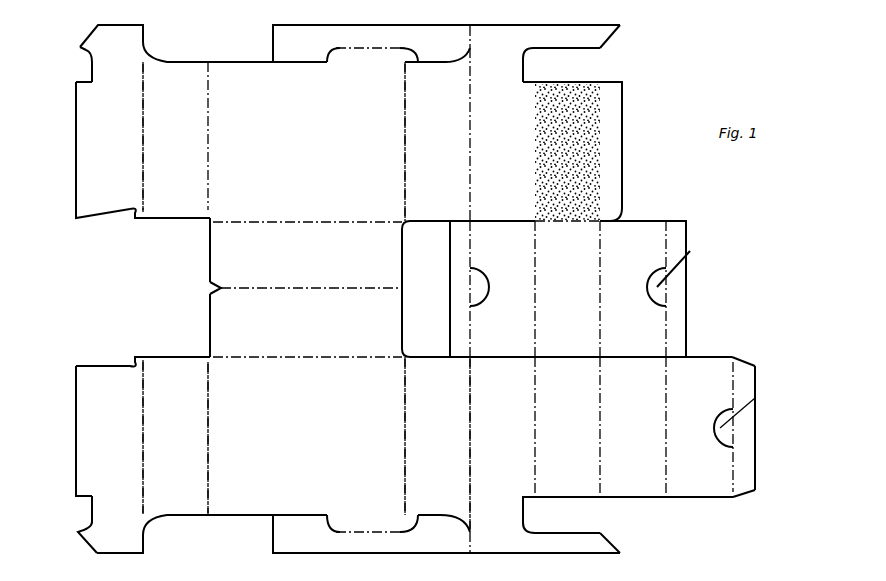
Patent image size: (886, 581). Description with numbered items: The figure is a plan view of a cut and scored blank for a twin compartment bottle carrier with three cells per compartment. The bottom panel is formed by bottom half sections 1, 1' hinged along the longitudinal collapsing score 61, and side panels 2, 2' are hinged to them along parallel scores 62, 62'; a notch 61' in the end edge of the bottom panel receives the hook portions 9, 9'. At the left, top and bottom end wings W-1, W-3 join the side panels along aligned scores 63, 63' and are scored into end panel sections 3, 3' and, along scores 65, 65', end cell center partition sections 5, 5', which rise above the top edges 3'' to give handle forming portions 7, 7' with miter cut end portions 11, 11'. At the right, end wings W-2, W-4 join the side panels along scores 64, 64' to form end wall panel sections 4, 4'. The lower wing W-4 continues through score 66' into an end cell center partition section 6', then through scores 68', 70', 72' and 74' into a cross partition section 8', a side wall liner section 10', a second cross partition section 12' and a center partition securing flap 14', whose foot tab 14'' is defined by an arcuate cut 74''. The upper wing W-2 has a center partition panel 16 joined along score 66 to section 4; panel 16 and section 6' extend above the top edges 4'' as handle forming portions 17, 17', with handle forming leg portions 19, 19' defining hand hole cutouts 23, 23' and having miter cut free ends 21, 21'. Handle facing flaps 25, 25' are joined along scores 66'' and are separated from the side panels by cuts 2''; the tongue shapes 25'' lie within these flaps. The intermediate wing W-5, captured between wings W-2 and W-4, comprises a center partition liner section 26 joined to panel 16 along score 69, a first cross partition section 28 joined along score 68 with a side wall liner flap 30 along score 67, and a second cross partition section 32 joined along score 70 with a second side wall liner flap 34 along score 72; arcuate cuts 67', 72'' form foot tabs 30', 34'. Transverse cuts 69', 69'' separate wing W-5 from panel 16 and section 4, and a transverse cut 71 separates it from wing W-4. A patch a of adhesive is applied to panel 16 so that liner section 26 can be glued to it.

The bottom half section 1 is at (257, 250).
The bottom half section 1' is at (259, 325).
The side panel 2 is at (259, 106).
The side panel 2' is at (260, 438).
The transverse cut 2'' is at (267, 288).
The end panel section 3 is at (162, 137).
The end panel section 3' is at (164, 437).
The top edge 3'' is at (175, 291).
The end wall panel section 4 is at (423, 140).
The end wall panel section 4' is at (426, 436).
The transverse cut 4'' is at (444, 290).
The end cell center partition section 5 is at (103, 150).
The end cell center partition section 5' is at (96, 431).
The end cell center partition section 6' is at (490, 444).
The handle forming portion 7 is at (111, 26).
The handle forming portion 7' is at (120, 555).
The cross partition section 8' is at (567, 457).
The hook portion 9 is at (164, 225).
The hook portion 9' is at (143, 347).
The side wall liner section 10' is at (633, 457).
The miter cut end portion 11 is at (65, 48).
The miter cut end portion 11' is at (73, 535).
The second cross partition section 12' is at (699, 429).
The center partition securing flap 14' is at (773, 428).
The foot tab 14'' is at (757, 429).
The center partition panel 16 is at (510, 136).
The handle forming portion 17 is at (502, 22).
The handle forming portion 17' is at (502, 559).
The handle forming leg portion 19 is at (567, 19).
The handle forming leg portion 19' is at (577, 563).
The free end 21 is at (633, 36).
The free end 21' is at (635, 544).
The hand hole cutout 23 is at (475, 44).
The hand hole cutout 23' is at (519, 539).
The handle facing flap 25 is at (446, 33).
The handle facing flap 25' is at (371, 547).
The tongue 25'' is at (372, 290).
The center partition liner section 26 is at (561, 293).
The first cross partition section 28 is at (498, 316).
The side wall liner flap 30 is at (429, 289).
The foot tab 30' is at (449, 289).
The second cross partition section 32 is at (625, 326).
The second side wall liner flap 34 is at (668, 289).
The foot tab 34' is at (699, 269).
The collapsing score 61 is at (311, 278).
The notch 61' is at (198, 287).
The score 62 is at (307, 210).
The score 62' is at (307, 368).
The score 63 is at (225, 136).
The score 63' is at (228, 438).
The score 64 is at (390, 141).
The score 64' is at (389, 436).
The score 65 is at (160, 137).
The score 65' is at (161, 437).
The transverse score 66 is at (484, 134).
The transverse score 66' is at (489, 444).
The transverse score 66'' is at (458, 293).
The transverse score 67 is at (487, 289).
The arcuate cut 67' is at (489, 277).
The transverse score 68 is at (551, 289).
The transverse score 68' is at (554, 427).
The transverse score 69 is at (567, 230).
The transverse cut 69' is at (492, 209).
The transverse cut 69'' is at (633, 202).
The transverse score 70 is at (616, 289).
The transverse score 70' is at (619, 427).
The transverse cut 71 is at (560, 360).
The transverse score 72 is at (696, 276).
The transverse score 72' is at (686, 427).
The arcuate cut 72'' is at (649, 276).
The transverse score 74' is at (765, 425).
The arcuate cut 74'' is at (763, 400).
The patch of adhesive a is at (567, 152).
The top end wing W-1 is at (66, 161).
The top end wing W-2 is at (640, 166).
The bottom end wing W-3 is at (66, 464).
The bottom end wing W-4 is at (780, 435).
The intermediate wing W-5 is at (718, 312).